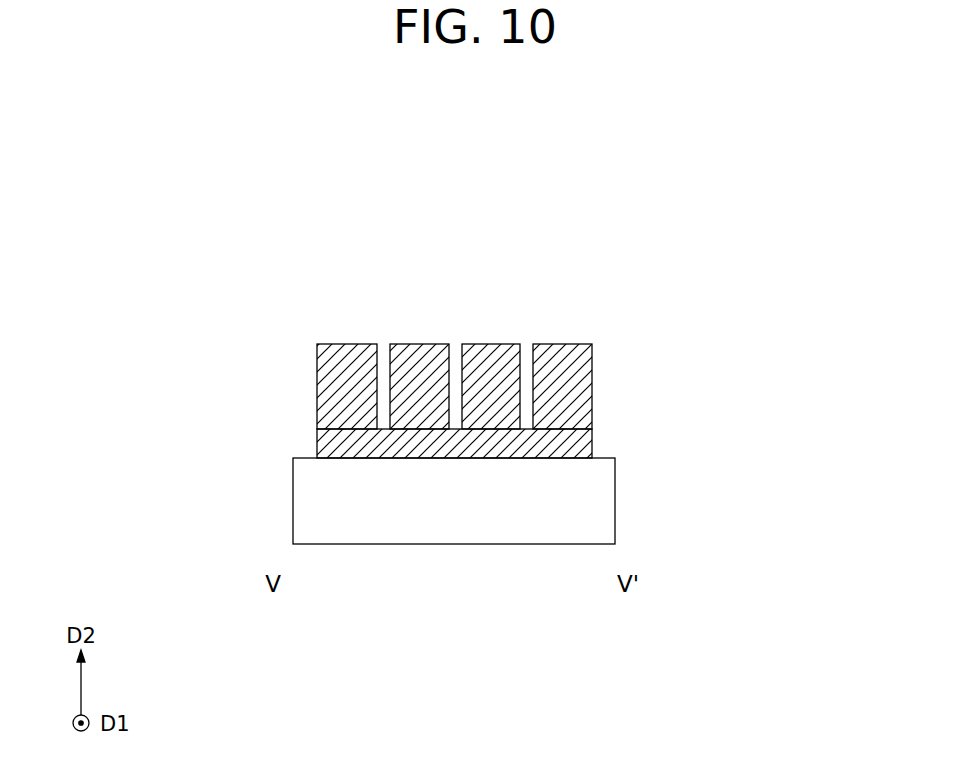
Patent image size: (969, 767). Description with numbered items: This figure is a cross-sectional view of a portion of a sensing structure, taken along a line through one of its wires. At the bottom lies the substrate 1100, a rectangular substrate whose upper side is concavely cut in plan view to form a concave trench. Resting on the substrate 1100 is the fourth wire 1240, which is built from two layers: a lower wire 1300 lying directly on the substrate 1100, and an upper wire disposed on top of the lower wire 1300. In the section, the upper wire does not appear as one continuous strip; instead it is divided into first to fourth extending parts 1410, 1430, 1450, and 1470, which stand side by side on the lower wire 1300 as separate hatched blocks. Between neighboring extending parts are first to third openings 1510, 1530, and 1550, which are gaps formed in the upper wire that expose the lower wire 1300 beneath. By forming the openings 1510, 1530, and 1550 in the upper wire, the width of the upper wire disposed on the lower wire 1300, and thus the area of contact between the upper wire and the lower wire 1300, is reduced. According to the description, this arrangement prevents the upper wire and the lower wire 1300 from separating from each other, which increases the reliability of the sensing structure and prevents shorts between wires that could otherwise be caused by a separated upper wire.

The substrate 1100 is at (615, 499).
The fourth wire 1240 is at (648, 350).
The lower wire 1300 is at (592, 442).
The first extending part 1410 is at (349, 344).
The second extending part 1430 is at (420, 344).
The third extending part 1450 is at (493, 344).
The fourth extending part 1470 is at (563, 344).
The first opening 1510 is at (383, 418).
The second opening 1530 is at (454, 418).
The third opening 1550 is at (527, 418).